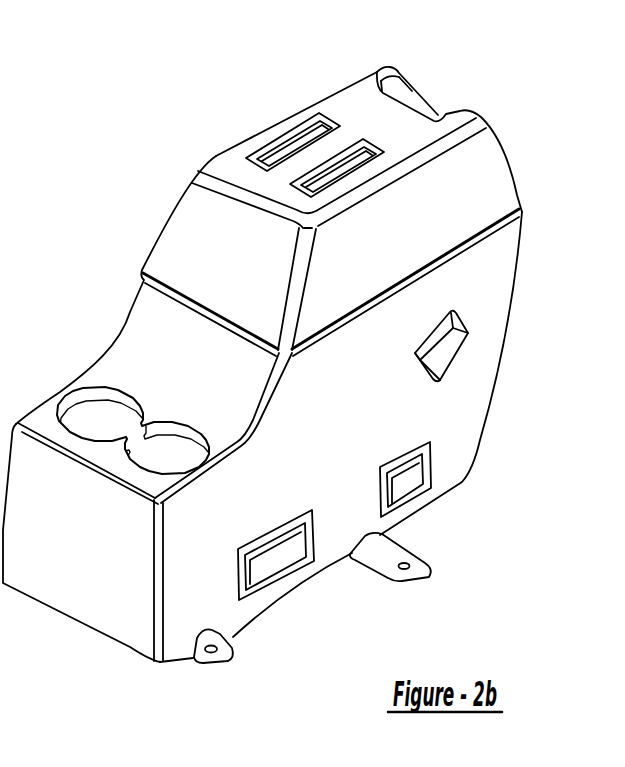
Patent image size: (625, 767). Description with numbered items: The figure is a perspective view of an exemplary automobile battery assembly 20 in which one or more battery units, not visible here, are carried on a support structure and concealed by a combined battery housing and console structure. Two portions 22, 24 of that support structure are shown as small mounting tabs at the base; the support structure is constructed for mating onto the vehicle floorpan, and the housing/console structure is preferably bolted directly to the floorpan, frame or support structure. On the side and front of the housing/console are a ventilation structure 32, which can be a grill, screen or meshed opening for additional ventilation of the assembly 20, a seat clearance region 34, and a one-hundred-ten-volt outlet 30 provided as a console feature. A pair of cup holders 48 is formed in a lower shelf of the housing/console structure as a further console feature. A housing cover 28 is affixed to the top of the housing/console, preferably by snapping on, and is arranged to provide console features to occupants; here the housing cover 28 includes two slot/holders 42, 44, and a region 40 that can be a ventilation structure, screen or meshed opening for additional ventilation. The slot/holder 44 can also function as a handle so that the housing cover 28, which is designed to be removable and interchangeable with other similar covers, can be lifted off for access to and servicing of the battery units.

The automobile battery assembly 20 is at (117, 97).
The support structure portion 22 is at (210, 664).
The support structure portion 24 is at (367, 572).
The housing cover 28 is at (292, 113).
The 110V outlet 30 is at (283, 573).
The ventilation structure 32 is at (410, 498).
The seat clearance region 34 is at (450, 371).
The region 40 is at (413, 94).
The slot/holder 42 is at (255, 150).
The slot/holder 44 is at (388, 150).
The cup holders 48 is at (83, 400).